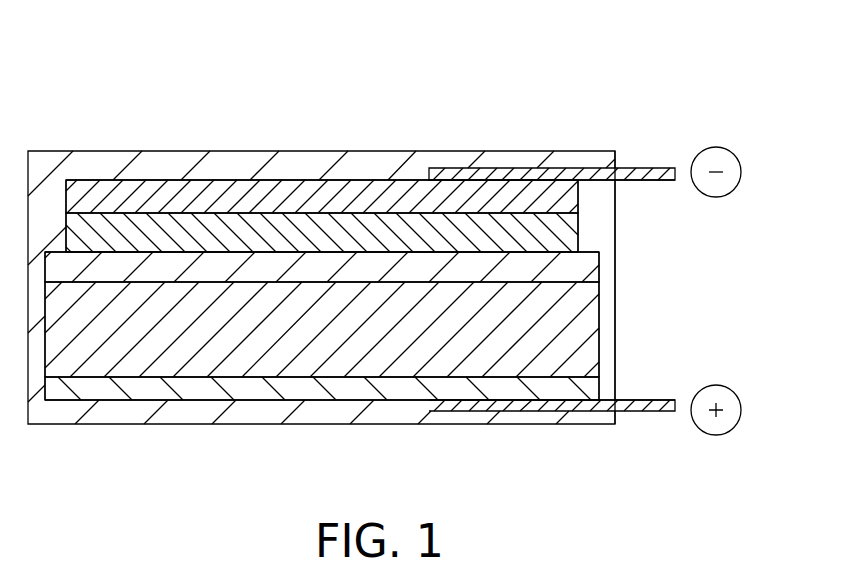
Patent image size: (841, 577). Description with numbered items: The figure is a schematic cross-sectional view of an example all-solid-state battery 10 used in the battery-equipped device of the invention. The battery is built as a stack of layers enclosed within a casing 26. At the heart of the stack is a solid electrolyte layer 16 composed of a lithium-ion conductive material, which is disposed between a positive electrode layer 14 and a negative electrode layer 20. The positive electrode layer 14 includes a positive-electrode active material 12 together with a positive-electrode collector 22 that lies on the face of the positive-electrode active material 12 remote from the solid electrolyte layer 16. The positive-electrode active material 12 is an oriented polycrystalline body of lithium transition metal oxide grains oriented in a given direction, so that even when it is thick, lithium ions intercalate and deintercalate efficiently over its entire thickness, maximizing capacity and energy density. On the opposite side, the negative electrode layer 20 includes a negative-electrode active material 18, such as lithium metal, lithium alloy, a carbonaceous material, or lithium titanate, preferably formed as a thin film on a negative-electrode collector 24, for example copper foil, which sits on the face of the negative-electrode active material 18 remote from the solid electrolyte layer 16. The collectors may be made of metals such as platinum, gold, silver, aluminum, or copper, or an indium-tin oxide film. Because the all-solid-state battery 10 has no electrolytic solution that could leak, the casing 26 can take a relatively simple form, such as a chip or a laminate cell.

The all-solid-state battery 10 is at (497, 88).
The positive-electrode active material 12 is at (580, 330).
The positive electrode layer 14 is at (387, 341).
The solid electrolyte layer 16 is at (592, 266).
The negative-electrode active material 18 is at (578, 231).
The negative electrode layer 20 is at (397, 218).
The positive-electrode collector 22 is at (356, 381).
The negative-electrode collector 24 is at (578, 192).
The casing 26 is at (570, 162).